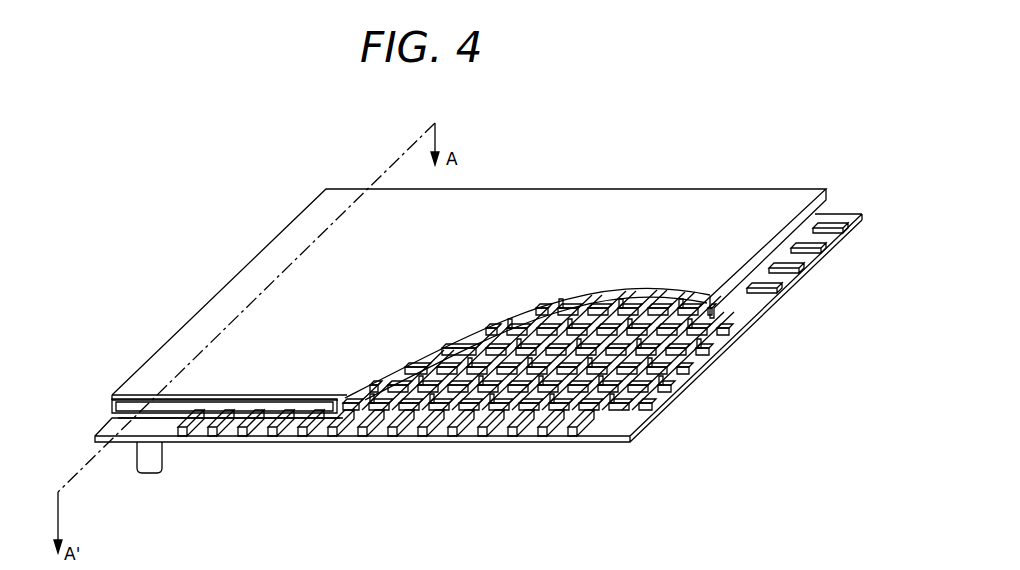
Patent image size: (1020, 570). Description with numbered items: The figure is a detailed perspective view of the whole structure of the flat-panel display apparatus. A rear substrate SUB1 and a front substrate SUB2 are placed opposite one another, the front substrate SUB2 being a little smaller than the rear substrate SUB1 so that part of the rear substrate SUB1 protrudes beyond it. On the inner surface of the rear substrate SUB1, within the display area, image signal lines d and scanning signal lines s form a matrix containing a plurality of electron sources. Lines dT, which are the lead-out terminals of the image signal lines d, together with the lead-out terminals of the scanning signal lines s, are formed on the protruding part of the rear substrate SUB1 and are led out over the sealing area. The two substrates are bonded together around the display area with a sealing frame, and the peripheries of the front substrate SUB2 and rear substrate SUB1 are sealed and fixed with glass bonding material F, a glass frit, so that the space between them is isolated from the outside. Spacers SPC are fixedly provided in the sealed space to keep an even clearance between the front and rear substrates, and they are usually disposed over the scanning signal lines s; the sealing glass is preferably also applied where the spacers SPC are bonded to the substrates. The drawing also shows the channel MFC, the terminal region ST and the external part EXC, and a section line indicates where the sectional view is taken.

The rear substrate SUB1 is at (318, 438).
The front substrate SUB2 is at (728, 200).
The microfluidic channel MFC is at (270, 405).
The glass bonding material F is at (825, 255).
The source terminal ST is at (707, 342).
The image signal line d is at (653, 390).
The scanning signal line s is at (450, 413).
The spacer SPC is at (497, 400).
The lead-out terminal of image signal line dT is at (585, 430).
The external connection EXC is at (160, 465).